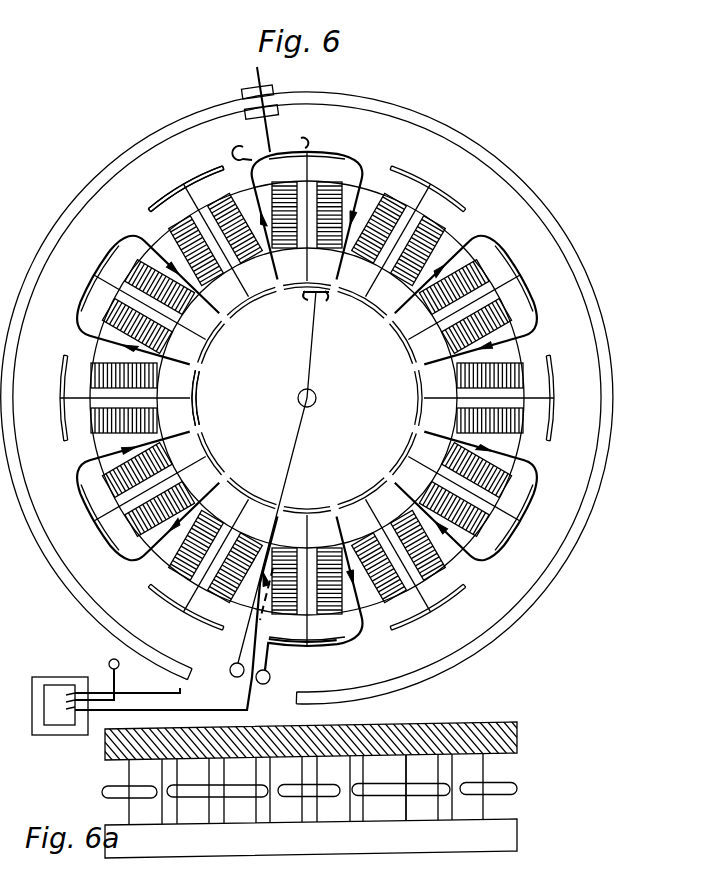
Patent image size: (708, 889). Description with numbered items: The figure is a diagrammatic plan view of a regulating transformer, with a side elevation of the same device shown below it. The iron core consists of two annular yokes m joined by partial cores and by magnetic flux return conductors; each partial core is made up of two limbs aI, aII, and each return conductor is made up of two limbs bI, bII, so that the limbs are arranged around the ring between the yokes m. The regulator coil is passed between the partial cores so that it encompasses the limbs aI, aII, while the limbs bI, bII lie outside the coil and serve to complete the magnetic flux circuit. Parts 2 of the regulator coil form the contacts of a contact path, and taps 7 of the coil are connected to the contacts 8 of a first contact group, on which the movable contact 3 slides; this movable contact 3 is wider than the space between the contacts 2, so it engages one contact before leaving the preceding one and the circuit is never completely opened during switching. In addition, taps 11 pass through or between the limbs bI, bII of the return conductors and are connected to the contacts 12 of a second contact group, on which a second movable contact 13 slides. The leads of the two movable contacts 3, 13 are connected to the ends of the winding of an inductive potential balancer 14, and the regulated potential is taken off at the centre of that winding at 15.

In FIG. 6, the contacts of the regulator coil 2 is at (198, 405).
In FIG. 6, the movable contact 3 is at (306, 301).
In FIG. 6, the taps 7 is at (165, 316).
In FIG. 6, the contacts 8 is at (208, 352).
In FIG. 6, the taps 11 is at (191, 197).
In FIG. 6, the contacts 12 is at (164, 192).
In FIG. 6, the movable contact 13 is at (309, 137).
In FIG. 6, the inductive potential balancer 14 is at (54, 736).
In FIG. 6, the regulated potential take-off 15 is at (111, 661).
In FIG. 6, the annular yokes m is at (257, 205).
In FIG. 6A, the annular yokes m is at (475, 740).
In FIG. 6, the first limb of the partial core aI is at (150, 280).
In FIG. 6A, the first limb of the partial core aI is at (373, 767).
In FIG. 6, the second limb of the partial core aII is at (110, 322).
In FIG. 6A, the second limb of the partial core aII is at (422, 767).
In FIG. 6, the first limb of the return conductor bI is at (190, 244).
In FIG. 6A, the first limb of the return conductor bI is at (337, 775).
In FIG. 6, the second limb of the return conductor bII is at (97, 380).
In FIG. 6A, the second limb of the return conductor bII is at (480, 770).